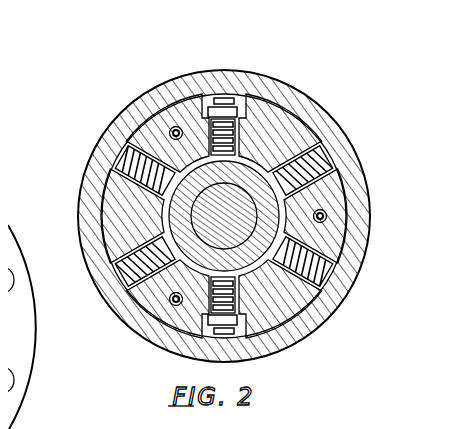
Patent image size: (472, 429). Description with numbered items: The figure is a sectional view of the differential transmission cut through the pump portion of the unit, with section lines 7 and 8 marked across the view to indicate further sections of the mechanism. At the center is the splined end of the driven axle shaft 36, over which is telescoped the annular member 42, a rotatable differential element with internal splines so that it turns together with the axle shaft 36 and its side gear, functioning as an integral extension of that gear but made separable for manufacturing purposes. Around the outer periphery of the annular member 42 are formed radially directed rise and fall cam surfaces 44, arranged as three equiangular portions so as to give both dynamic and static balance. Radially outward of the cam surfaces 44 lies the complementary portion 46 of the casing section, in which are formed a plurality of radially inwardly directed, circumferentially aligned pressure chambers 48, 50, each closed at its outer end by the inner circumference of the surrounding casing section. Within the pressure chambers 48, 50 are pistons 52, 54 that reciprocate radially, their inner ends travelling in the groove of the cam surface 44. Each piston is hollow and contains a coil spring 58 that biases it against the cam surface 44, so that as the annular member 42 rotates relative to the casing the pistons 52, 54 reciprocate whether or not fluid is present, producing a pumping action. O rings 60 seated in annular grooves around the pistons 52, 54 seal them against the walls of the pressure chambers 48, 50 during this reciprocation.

The section line 7- 7 is at (150, 92).
The section line 8- 8 is at (70, 205).
The driven axle shaft 36 is at (206, 184).
The annular member 42 is at (305, 318).
The cam surfaces 44 is at (272, 104).
The complementary portion 46 is at (146, 214).
The pressure chamber 48 is at (206, 88).
The pressure chamber 50 is at (118, 162).
The piston 52 is at (233, 100).
The piston 54 is at (108, 128).
The coil spring 58 is at (222, 88).
The O ring 60 is at (255, 118).